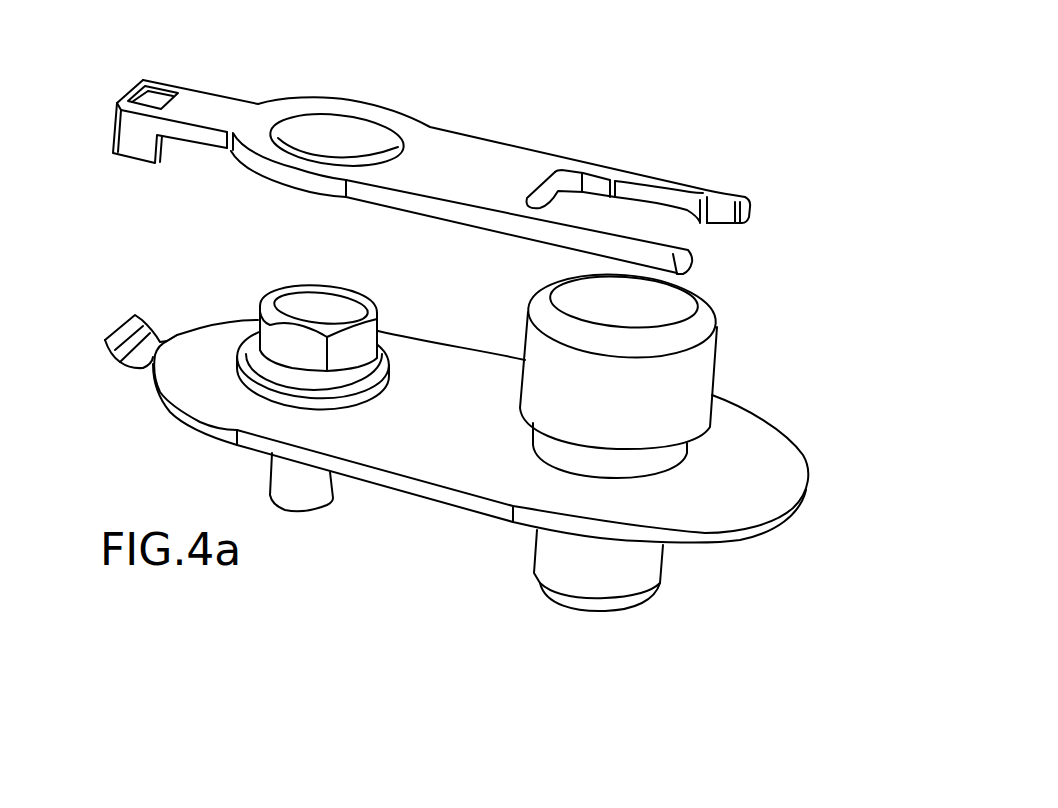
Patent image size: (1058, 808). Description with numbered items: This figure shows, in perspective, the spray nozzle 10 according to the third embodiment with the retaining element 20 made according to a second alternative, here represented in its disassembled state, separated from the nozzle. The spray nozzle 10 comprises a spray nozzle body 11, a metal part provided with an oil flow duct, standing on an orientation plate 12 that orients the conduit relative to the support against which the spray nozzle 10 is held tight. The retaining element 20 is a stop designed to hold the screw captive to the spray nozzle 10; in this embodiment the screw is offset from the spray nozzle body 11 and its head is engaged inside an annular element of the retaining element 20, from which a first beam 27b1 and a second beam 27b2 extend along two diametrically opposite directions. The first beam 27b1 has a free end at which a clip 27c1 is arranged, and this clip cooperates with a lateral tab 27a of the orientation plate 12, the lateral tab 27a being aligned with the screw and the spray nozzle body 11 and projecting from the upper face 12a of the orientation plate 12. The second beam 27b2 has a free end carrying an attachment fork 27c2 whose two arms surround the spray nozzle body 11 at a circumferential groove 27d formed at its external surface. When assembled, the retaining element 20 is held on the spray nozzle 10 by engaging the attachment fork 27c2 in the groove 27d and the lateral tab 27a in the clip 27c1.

The spray nozzle 10 is at (110, 75).
The retaining element 20 is at (501, 146).
The clip 27c1 is at (155, 97).
The first beam 27b1 is at (203, 115).
The second beam 27b2 is at (513, 150).
The attachment fork 27c2 is at (693, 188).
The spray nozzle body 11 is at (700, 365).
The orientation plate 12 is at (660, 503).
The upper face of the orientation plate 12a is at (747, 425).
The lateral tab 27a is at (117, 361).
The circumferential groove 27d is at (670, 458).